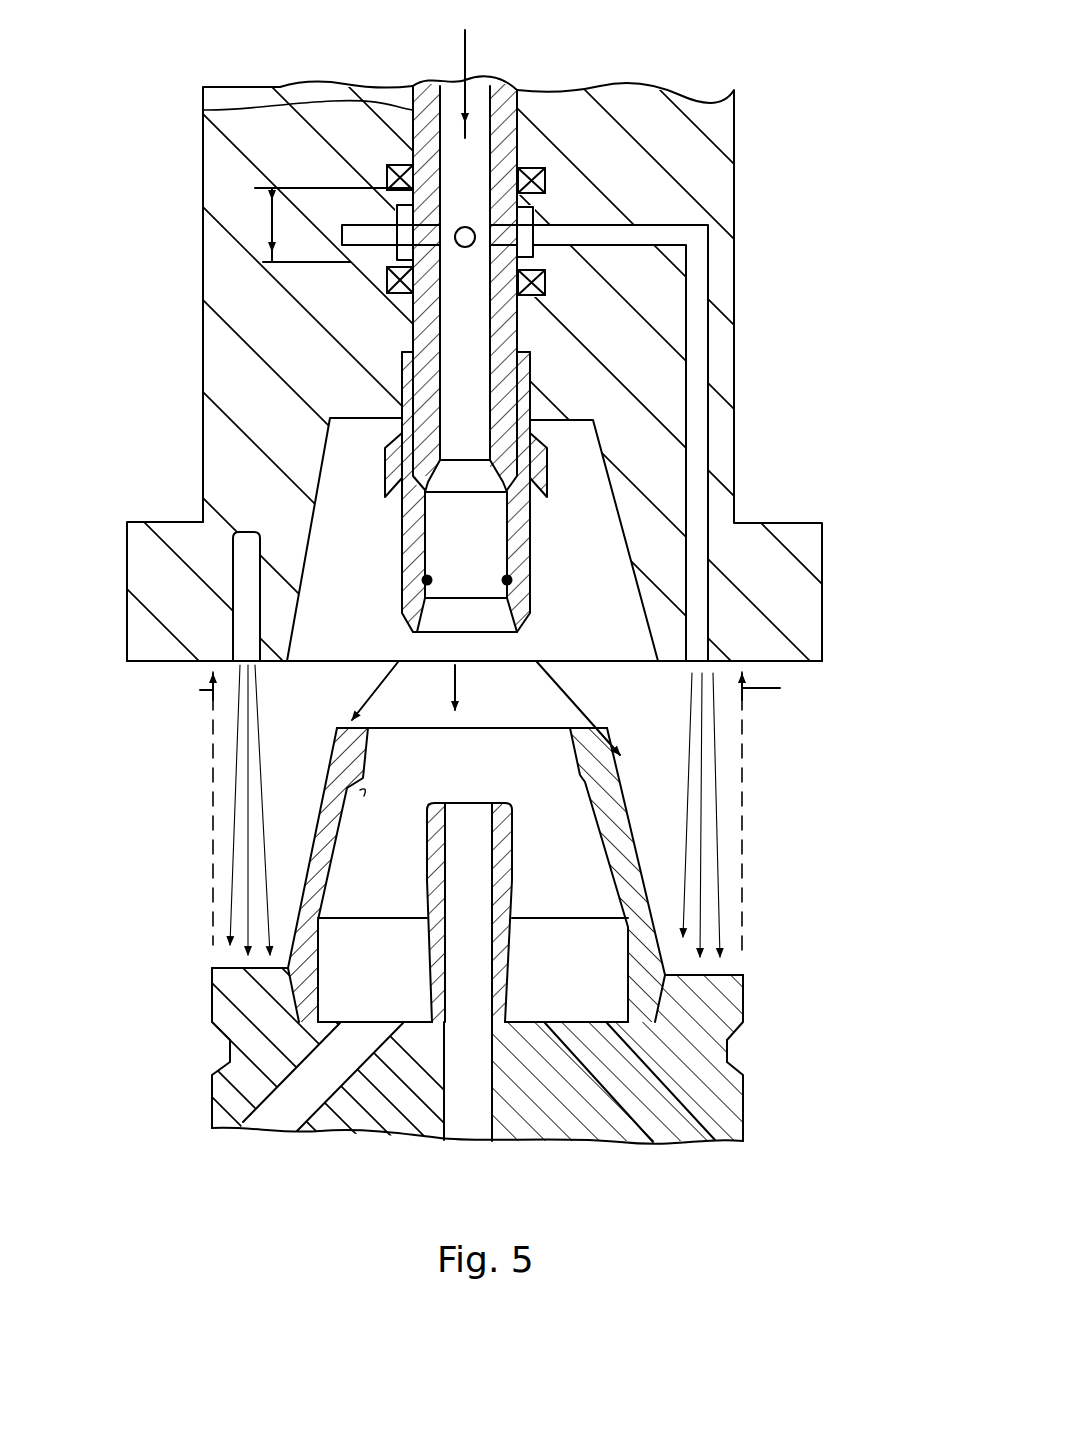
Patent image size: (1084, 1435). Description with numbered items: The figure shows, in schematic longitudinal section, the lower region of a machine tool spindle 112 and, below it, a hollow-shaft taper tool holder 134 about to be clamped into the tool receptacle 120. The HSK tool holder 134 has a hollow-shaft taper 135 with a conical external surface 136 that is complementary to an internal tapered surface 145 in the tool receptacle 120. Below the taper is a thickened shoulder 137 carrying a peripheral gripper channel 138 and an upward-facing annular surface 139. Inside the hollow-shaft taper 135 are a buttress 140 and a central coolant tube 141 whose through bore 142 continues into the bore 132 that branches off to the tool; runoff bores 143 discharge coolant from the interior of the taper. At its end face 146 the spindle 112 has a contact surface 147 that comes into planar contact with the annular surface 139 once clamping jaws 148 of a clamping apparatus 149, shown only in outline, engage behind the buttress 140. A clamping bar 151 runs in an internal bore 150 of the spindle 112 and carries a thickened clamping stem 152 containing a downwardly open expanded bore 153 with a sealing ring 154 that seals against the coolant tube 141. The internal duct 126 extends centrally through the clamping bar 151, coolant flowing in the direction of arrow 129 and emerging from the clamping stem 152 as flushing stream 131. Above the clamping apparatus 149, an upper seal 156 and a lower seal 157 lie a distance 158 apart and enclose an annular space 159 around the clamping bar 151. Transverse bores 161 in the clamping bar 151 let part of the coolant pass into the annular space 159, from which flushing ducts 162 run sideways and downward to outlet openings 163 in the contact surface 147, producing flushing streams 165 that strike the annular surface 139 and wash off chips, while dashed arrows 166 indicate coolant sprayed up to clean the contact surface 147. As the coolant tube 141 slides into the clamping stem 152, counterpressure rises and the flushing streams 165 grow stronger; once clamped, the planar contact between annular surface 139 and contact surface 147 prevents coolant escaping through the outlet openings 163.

The spindle 112 is at (668, 112).
The tool receptacle 120 is at (583, 462).
The internal duct 126 is at (605, 98).
The arrow 129 is at (475, 40).
The flushing stream 131 is at (508, 690).
The bore 132 is at (475, 1112).
The hollow-shaft taper tool holder 134 is at (785, 1168).
The hollow-shaft taper 135 is at (623, 827).
The conical external surface 136 is at (623, 803).
The thickened shoulder 137 is at (743, 1030).
The gripper channel 138 is at (730, 1068).
The annular surface 139 is at (725, 1020).
The buttress 140 is at (319, 813).
The coolant tube 141 is at (702, 933).
The through bore 142 is at (467, 853).
The runoff bores 143 is at (290, 1112).
The internal tapered surface 145 is at (620, 507).
The end face 146 is at (745, 668).
The contact surface 147 is at (720, 668).
The clamping jaws 148 is at (393, 467).
The clamping apparatus 149 is at (395, 440).
The internal bore 150 is at (605, 320).
The clamping bar 151 is at (203, 105).
The clamping stem 152 is at (530, 543).
The expanded bore 153 is at (509, 580).
The sealing ring 154 is at (425, 578).
The upper seal 156 is at (387, 168).
The lower seal 157 is at (380, 352).
The distance 158 is at (263, 225).
The annular space 159 is at (545, 205).
The transverse bores 161 is at (540, 225).
The flushing ducts 162 is at (387, 287).
The outlet openings 163 is at (697, 662).
The flushing streams 165 is at (253, 918).
The dashed arrows 166 is at (200, 690).